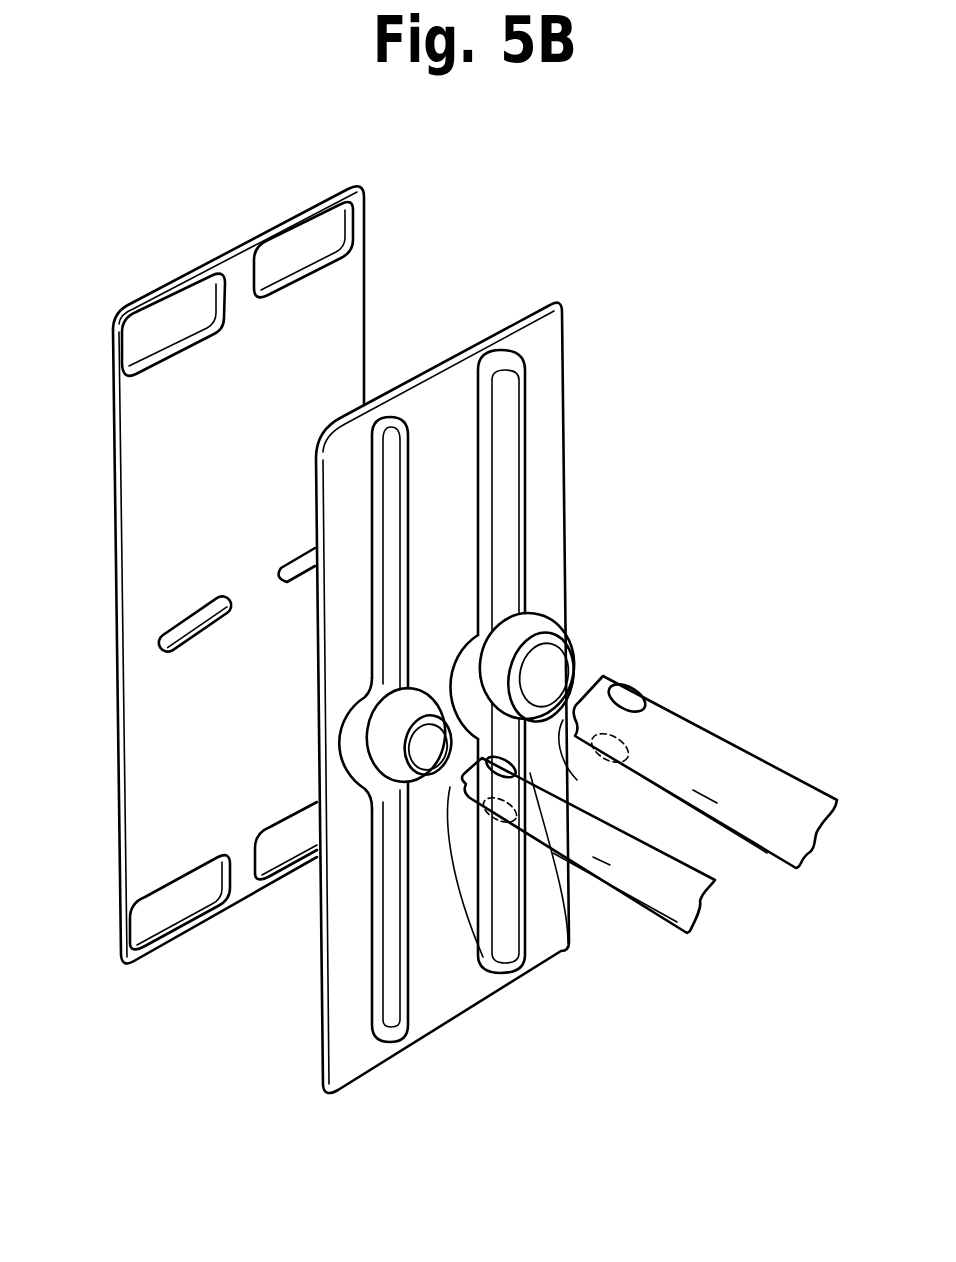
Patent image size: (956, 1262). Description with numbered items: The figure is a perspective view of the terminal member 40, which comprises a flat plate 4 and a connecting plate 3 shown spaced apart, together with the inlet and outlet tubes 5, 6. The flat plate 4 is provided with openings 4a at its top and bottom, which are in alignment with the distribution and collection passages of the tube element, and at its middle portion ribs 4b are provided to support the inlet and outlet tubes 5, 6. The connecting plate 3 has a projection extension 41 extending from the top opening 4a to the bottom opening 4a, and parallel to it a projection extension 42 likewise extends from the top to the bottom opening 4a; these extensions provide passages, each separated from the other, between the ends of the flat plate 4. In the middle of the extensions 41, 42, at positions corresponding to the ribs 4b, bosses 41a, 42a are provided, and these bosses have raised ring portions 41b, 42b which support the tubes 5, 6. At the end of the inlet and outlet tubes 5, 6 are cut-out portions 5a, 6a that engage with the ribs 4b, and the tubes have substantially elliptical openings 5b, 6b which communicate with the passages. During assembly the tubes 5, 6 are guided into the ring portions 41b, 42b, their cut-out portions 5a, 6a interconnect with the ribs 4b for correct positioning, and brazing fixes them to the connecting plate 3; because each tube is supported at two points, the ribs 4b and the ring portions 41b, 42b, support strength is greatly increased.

The terminal member 40 is at (516, 215).
The connecting plate 3 is at (516, 303).
The flat plate 4 is at (273, 228).
The openings 4a is at (357, 240).
The ribs 4b is at (197, 607).
The projection extension 41 is at (405, 513).
The boss 41a is at (422, 682).
The raised ring portion 41b is at (383, 750).
The projection extension 42 is at (523, 500).
The boss 42a is at (535, 612).
The raised ring portion 42b is at (557, 633).
The inlet tube 5 is at (645, 905).
The cut-out portion 5a is at (498, 973).
The opening 5b is at (568, 943).
The outlet tube 6 is at (732, 743).
The cut-out portion 6a is at (578, 776).
The opening 6b is at (637, 692).